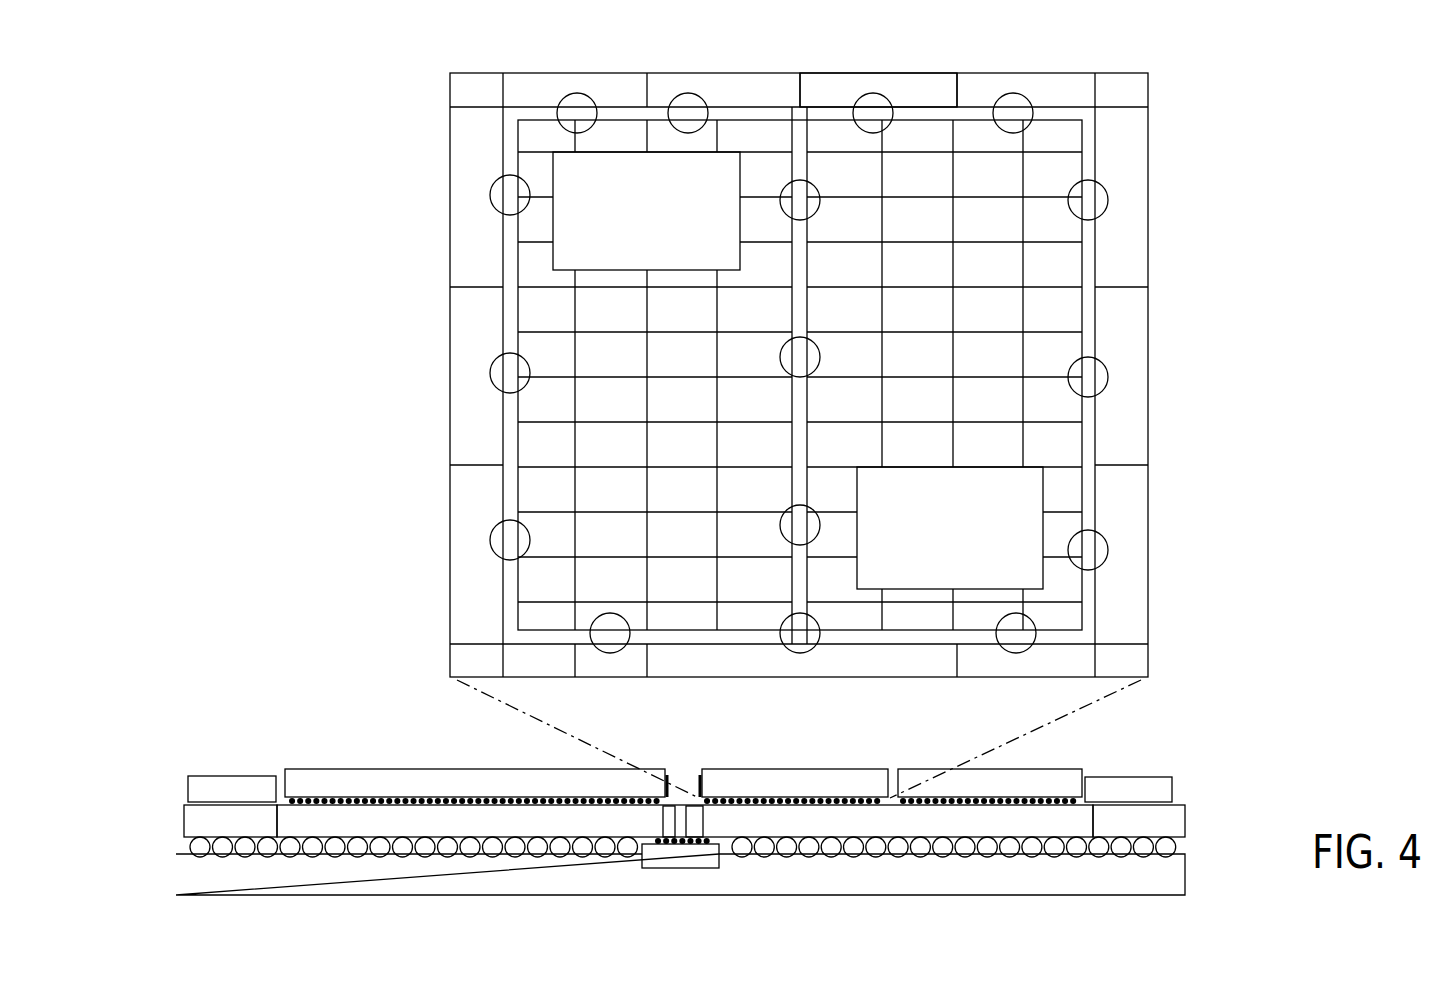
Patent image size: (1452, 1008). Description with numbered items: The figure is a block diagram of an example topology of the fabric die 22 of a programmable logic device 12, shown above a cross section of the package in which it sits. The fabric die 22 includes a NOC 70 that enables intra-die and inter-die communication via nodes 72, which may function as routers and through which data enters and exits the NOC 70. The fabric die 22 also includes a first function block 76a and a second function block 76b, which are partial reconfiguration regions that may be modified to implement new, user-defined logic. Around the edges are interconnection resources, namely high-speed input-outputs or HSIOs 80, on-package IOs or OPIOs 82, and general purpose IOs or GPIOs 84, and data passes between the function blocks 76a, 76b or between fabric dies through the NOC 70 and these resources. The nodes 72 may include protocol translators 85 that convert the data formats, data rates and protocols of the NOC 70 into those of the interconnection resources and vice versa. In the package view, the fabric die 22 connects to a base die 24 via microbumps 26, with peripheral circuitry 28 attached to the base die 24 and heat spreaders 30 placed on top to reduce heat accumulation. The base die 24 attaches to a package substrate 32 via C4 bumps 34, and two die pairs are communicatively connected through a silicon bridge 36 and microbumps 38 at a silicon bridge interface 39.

The programmable logic device 12 is at (235, 712).
The fabric die 22 is at (400, 106).
The base die 24 is at (335, 820).
The microbumps 26 is at (695, 786).
The peripheral circuitry 28 is at (184, 822).
The heat spreaders 30 is at (188, 787).
The package substrate 32 is at (176, 875).
The C4 bumps 34 is at (178, 848).
The silicon bridge 36 is at (712, 860).
The microbumps 38 is at (638, 844).
The silicon bridge interface 39 is at (668, 823).
The NOC 70 is at (803, 115).
The nodes 72 is at (688, 112).
The function block 76a is at (585, 190).
The function block 76b is at (1015, 548).
The high-speed input-outputs (HSIOs) 80 is at (466, 262).
The on-package IOs (OPIOs) 82 is at (1134, 262).
The general purpose IOs (GPIOs) 84 is at (1002, 82).
The protocol translators 85 is at (1103, 527).